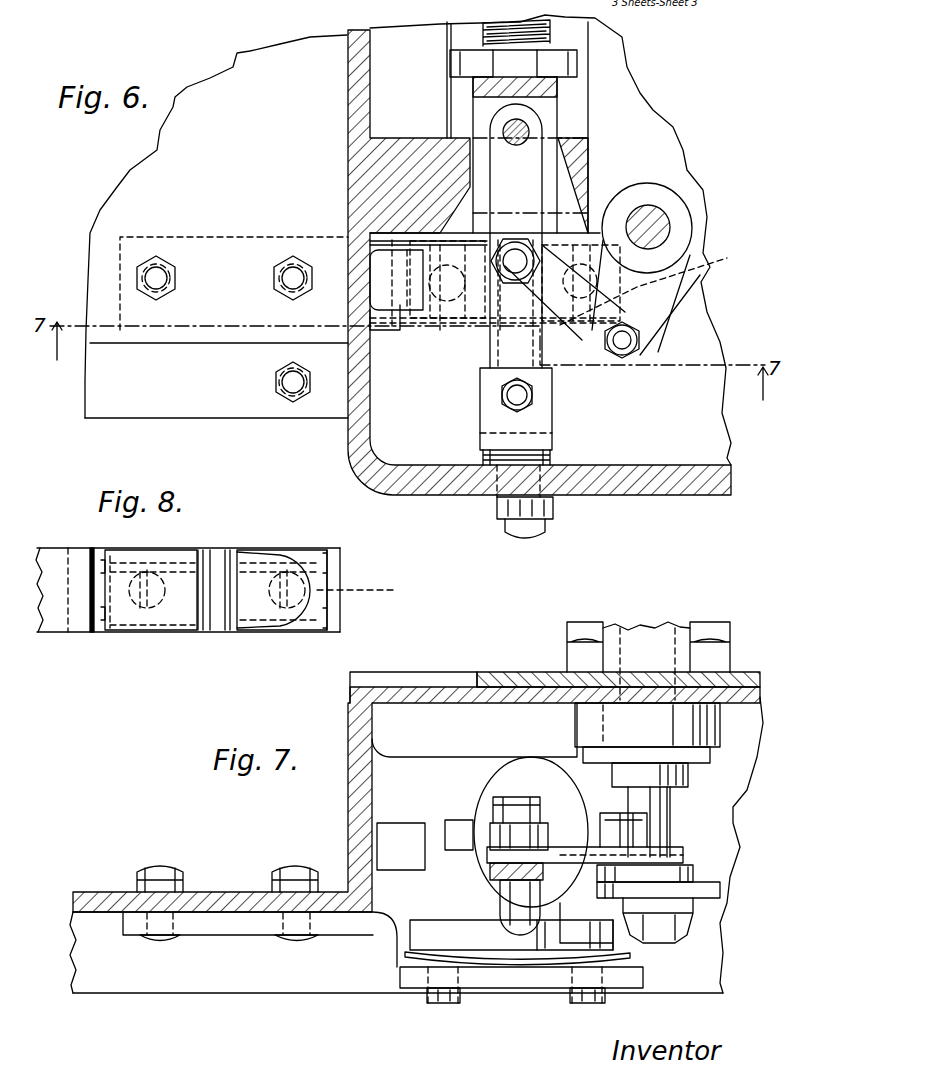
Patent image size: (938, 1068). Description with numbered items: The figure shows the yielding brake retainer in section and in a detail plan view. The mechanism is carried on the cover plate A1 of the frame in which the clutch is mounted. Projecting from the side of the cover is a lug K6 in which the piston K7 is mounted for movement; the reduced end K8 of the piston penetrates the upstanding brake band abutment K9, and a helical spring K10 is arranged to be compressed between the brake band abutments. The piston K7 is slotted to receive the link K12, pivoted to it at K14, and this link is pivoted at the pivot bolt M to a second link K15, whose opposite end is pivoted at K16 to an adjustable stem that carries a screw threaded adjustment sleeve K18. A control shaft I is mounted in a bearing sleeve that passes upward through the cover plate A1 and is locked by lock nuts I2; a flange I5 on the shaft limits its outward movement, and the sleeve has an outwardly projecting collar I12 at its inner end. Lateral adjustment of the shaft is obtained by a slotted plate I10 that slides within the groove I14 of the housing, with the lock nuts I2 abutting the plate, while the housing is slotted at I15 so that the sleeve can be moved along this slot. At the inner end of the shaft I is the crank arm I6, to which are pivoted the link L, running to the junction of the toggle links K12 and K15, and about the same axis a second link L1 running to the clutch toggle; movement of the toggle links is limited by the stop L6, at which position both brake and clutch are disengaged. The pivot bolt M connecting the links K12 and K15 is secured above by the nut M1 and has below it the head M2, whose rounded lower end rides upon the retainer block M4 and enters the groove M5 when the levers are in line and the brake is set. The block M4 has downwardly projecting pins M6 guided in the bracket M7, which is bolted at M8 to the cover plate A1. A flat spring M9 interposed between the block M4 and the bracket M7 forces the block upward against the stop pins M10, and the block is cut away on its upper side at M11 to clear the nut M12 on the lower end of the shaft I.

In FIG. 6, the cover plate A1 is at (348, 103).
In FIG. 7, the cover plate A1 is at (348, 708).
In FIG. 6, the bracket M7 is at (232, 237).
In FIG. 8, the bracket M7 is at (50, 556).
In FIG. 7, the bracket M7 is at (390, 970).
In FIG. 6, the bolts M8 is at (274, 282).
In FIG. 7, the bolts M8 is at (278, 880).
In FIG. 6, the crank arm I6 is at (383, 273).
In FIG. 7, the crank arm I6 is at (405, 845).
In FIG. 6, the lug K6 is at (575, 165).
In FIG. 7, the lug K6 is at (495, 760).
In FIG. 6, the piston K7 is at (560, 87).
In FIG. 7, the piston K7 is at (500, 800).
In FIG. 6, the reduced end of piston K8 is at (545, 55).
In FIG. 6, the brake band abutment K9 is at (547, 65).
In FIG. 6, the helical spring K10 is at (550, 30).
In FIG. 6, the link K12 is at (528, 170).
In FIG. 7, the link K12 is at (498, 832).
In FIG. 6, the pivot K14 is at (530, 125).
In FIG. 6, the link K15 is at (490, 378).
In FIG. 7, the link K15 is at (490, 868).
In FIG. 6, the pivot K16 is at (510, 405).
In FIG. 6, the adjustment sleeve K18 is at (545, 522).
In FIG. 6, the pivot bolt M is at (518, 258).
In FIG. 7, the pivot bolt M is at (518, 798).
In FIG. 6, the nut M1 is at (500, 242).
In FIG. 7, the nut M1 is at (545, 815).
In FIG. 7, the head M2 is at (522, 910).
In FIG. 6, the retainer block M4 is at (447, 300).
In FIG. 8, the retainer block M4 is at (180, 625).
In FIG. 7, the retainer block M4 is at (420, 938).
In FIG. 6, the groove M5 is at (460, 325).
In FIG. 8, the groove M5 is at (215, 630).
In FIG. 7, the groove M5 is at (520, 930).
In FIG. 6, the pins M6 is at (425, 325).
In FIG. 8, the pins M6 is at (140, 590).
In FIG. 7, the pins M6 is at (430, 1000).
In FIG. 6, the flat spring M9 is at (398, 325).
In FIG. 8, the flat spring M9 is at (340, 560).
In FIG. 7, the flat spring M9 is at (565, 960).
In FIG. 8, the stop pins M10 is at (285, 570).
In FIG. 7, the stop pins M10 is at (450, 1004).
In FIG. 6, the cut-away M11 is at (595, 260).
In FIG. 8, the cut-away M11 is at (290, 585).
In FIG. 7, the cut-away M11 is at (598, 935).
In FIG. 7, the nut M12 is at (690, 925).
In FIG. 6, the control shaft I is at (660, 222).
In FIG. 7, the control shaft I is at (672, 805).
In FIG. 7, the lock nuts I2 is at (725, 658).
In FIG. 7, the flange I5 is at (690, 778).
In FIG. 7, the plate I10 is at (500, 680).
In FIG. 7, the collar I12 is at (712, 755).
In FIG. 7, the groove I14 is at (440, 685).
In FIG. 7, the slot I15 is at (605, 722).
In FIG. 6, the link L is at (582, 340).
In FIG. 7, the link L is at (660, 850).
In FIG. 6, the second link L1 is at (700, 343).
In FIG. 7, the second link L1 is at (722, 891).
In FIG. 7, the stop L6 is at (700, 868).